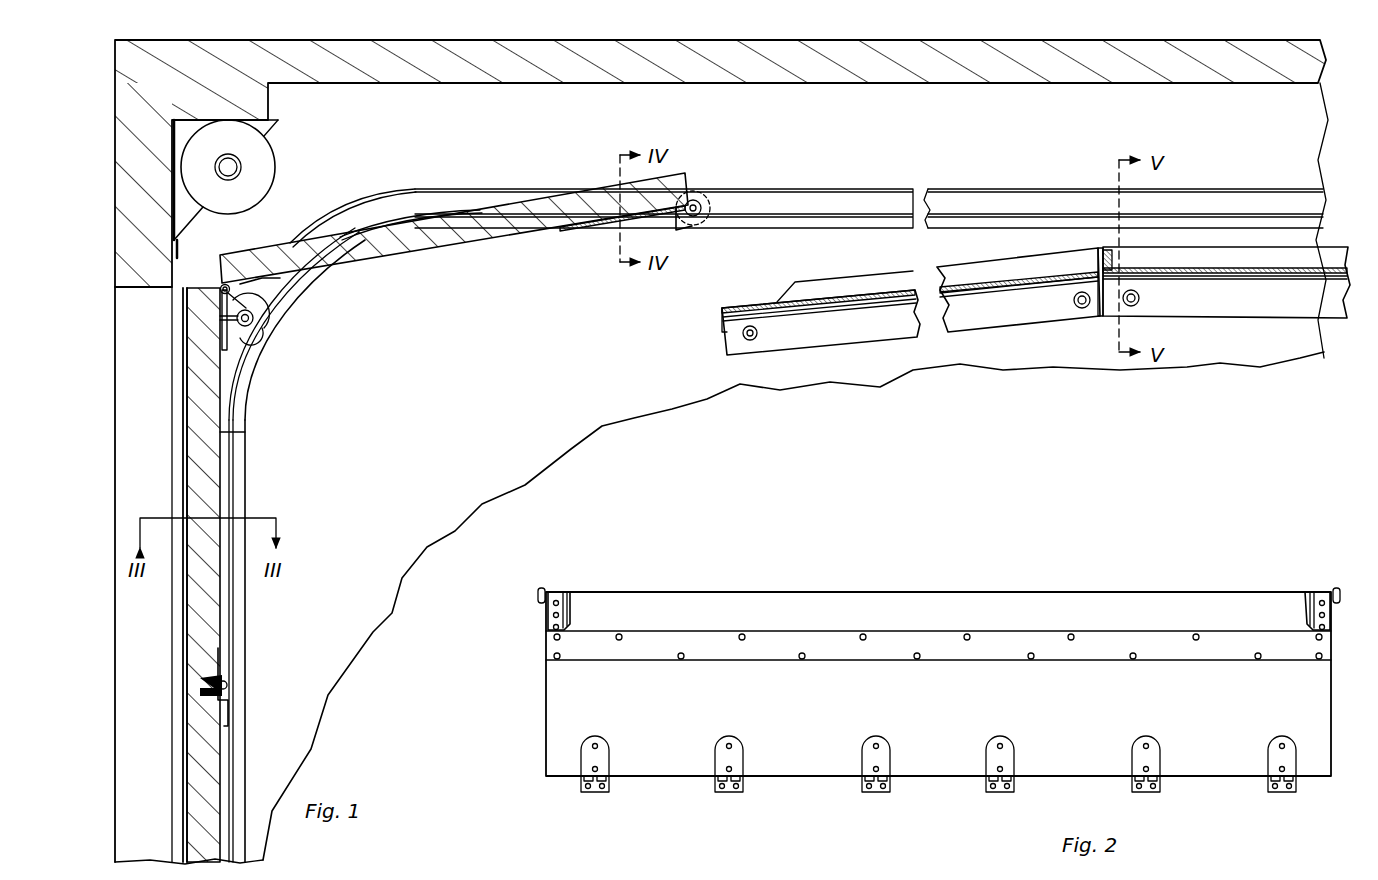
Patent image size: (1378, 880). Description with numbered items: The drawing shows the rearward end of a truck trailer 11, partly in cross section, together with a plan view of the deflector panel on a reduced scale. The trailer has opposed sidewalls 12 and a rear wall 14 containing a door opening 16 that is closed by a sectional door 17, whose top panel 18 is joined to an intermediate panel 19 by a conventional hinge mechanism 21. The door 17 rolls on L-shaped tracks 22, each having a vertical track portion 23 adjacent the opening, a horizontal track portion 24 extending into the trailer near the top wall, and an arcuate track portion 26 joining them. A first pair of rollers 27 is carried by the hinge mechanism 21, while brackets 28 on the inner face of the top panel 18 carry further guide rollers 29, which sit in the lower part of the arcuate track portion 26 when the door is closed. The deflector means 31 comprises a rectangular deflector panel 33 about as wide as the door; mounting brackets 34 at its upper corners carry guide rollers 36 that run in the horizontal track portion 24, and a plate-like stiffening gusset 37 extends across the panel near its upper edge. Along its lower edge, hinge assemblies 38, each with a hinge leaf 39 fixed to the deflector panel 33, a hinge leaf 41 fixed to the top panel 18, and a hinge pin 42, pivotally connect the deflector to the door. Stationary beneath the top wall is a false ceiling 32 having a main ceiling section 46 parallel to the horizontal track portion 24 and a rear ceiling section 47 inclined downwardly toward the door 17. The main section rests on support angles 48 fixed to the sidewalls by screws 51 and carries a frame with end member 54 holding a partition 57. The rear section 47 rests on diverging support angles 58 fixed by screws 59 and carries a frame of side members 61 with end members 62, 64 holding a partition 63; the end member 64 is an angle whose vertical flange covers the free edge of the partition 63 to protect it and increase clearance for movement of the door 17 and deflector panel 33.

In FIG. 1, the truck trailer 11 is at (716, 402).
In FIG. 1, the sidewall 12 is at (1300, 148).
In FIG. 1, the rear wall 14 is at (126, 206).
In FIG. 1, the door opening 16 is at (132, 287).
In FIG. 1, the door 17 is at (184, 628).
In FIG. 1, the top panel 18 is at (186, 392).
In FIG. 1, the intermediate panel 19 is at (196, 764).
In FIG. 1, the hinge mechanism 21 is at (229, 684).
In FIG. 1, the L-shaped track 22 is at (314, 216).
In FIG. 1, the vertical track portion 23 is at (240, 454).
In FIG. 1, the horizontal track portion 24 is at (814, 203).
In FIG. 1, the arcuate track portion 26 is at (318, 236).
In FIG. 1, the roller 27 is at (230, 700).
In FIG. 1, the bracket 28 is at (250, 340).
In FIG. 1, the guide roller 29 is at (254, 318).
In FIG. 1, the deflector means 31 is at (400, 258).
In FIG. 2, the deflector means 31 is at (1081, 588).
In FIG. 1, the false ceiling 32 is at (1042, 330).
In FIG. 1, the deflector panel 33 is at (425, 250).
In FIG. 2, the deflector panel 33 is at (708, 607).
In FIG. 1, the mounting bracket 34 is at (678, 222).
In FIG. 2, the mounting bracket 34 is at (548, 610).
In FIG. 1, the guide roller 36 is at (700, 200).
In FIG. 2, the guide roller 36 is at (540, 590).
In FIG. 1, the stiffening gusset 37 is at (600, 228).
In FIG. 2, the stiffening gusset 37 is at (877, 636).
In FIG. 1, the hinge assembly 38 is at (288, 288).
In FIG. 2, the hinge assembly 38 is at (578, 784).
In FIG. 1, the hinge leaf 39 is at (238, 270).
In FIG. 2, the hinge leaf 39 is at (868, 756).
In FIG. 1, the hinge leaf 41 is at (220, 303).
In FIG. 2, the hinge leaf 41 is at (874, 794).
In FIG. 1, the hinge pin 42 is at (222, 285).
In FIG. 2, the hinge pin 42 is at (860, 778).
In FIG. 1, the main ceiling section 46 is at (1228, 296).
In FIG. 1, the rear ceiling section 47 is at (986, 300).
In FIG. 1, the support angle 48 is at (1316, 306).
In FIG. 1, the screw 51 is at (1138, 302).
In FIG. 1, the end member 54 is at (1112, 256).
In FIG. 1, the partition 57 is at (1250, 268).
In FIG. 1, the support angle 58 is at (832, 332).
In FIG. 1, the screw 59 is at (750, 342).
In FIG. 1, the side member 61 is at (828, 296).
In FIG. 1, the end member 62 is at (1094, 270).
In FIG. 1, the partition 63 is at (866, 294).
In FIG. 1, the end member 64 is at (738, 308).